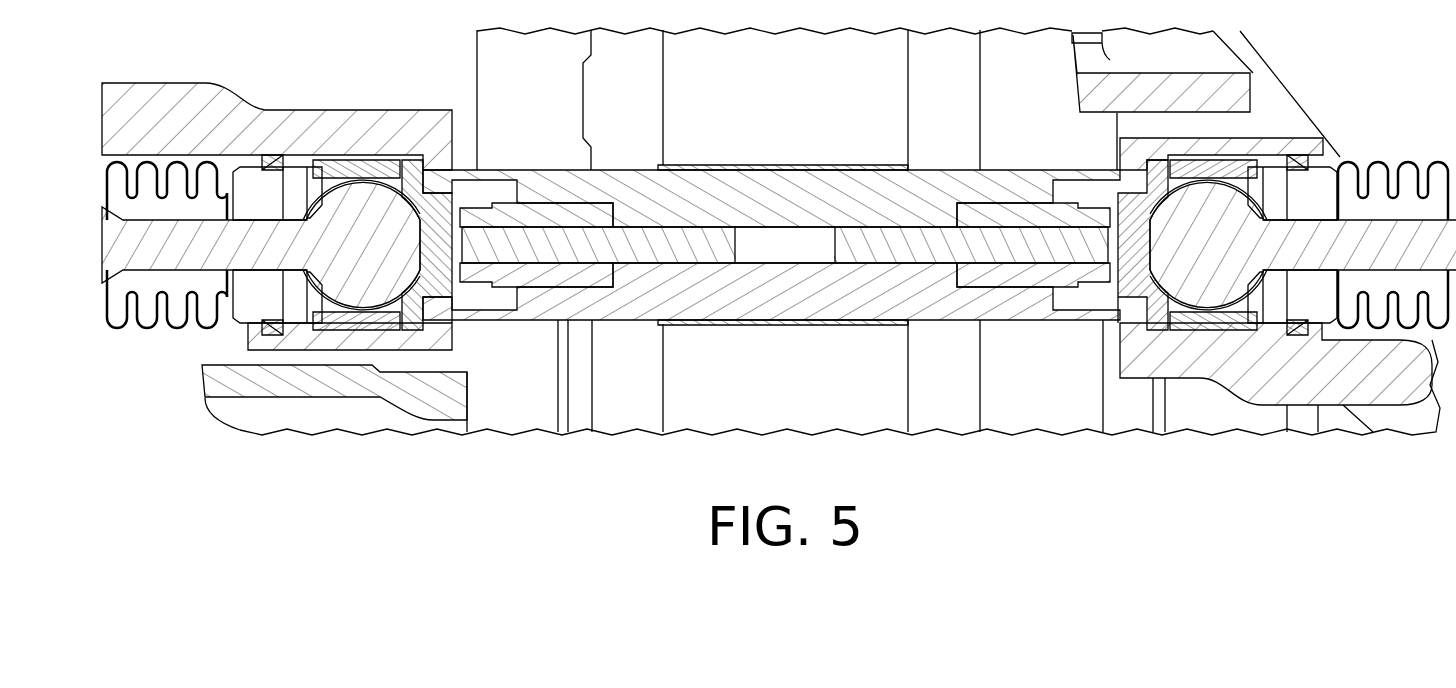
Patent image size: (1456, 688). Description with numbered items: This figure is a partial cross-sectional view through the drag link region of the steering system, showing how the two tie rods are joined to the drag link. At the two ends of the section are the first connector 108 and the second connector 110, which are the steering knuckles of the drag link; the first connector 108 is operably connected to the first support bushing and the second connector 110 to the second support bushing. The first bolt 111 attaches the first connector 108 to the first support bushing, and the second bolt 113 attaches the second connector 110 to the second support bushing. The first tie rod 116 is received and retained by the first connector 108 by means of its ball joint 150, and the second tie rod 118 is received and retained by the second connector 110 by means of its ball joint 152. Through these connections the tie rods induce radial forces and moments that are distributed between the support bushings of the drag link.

The first connector 108 is at (1267, 150).
The second connector 110 is at (343, 120).
The first bolt 111 is at (1037, 230).
The second bolt 113 is at (683, 230).
The first tie rod 116 is at (1380, 243).
The second tie rod 118 is at (203, 258).
The ball joint 150 is at (1183, 270).
The ball joint 152 is at (373, 220).